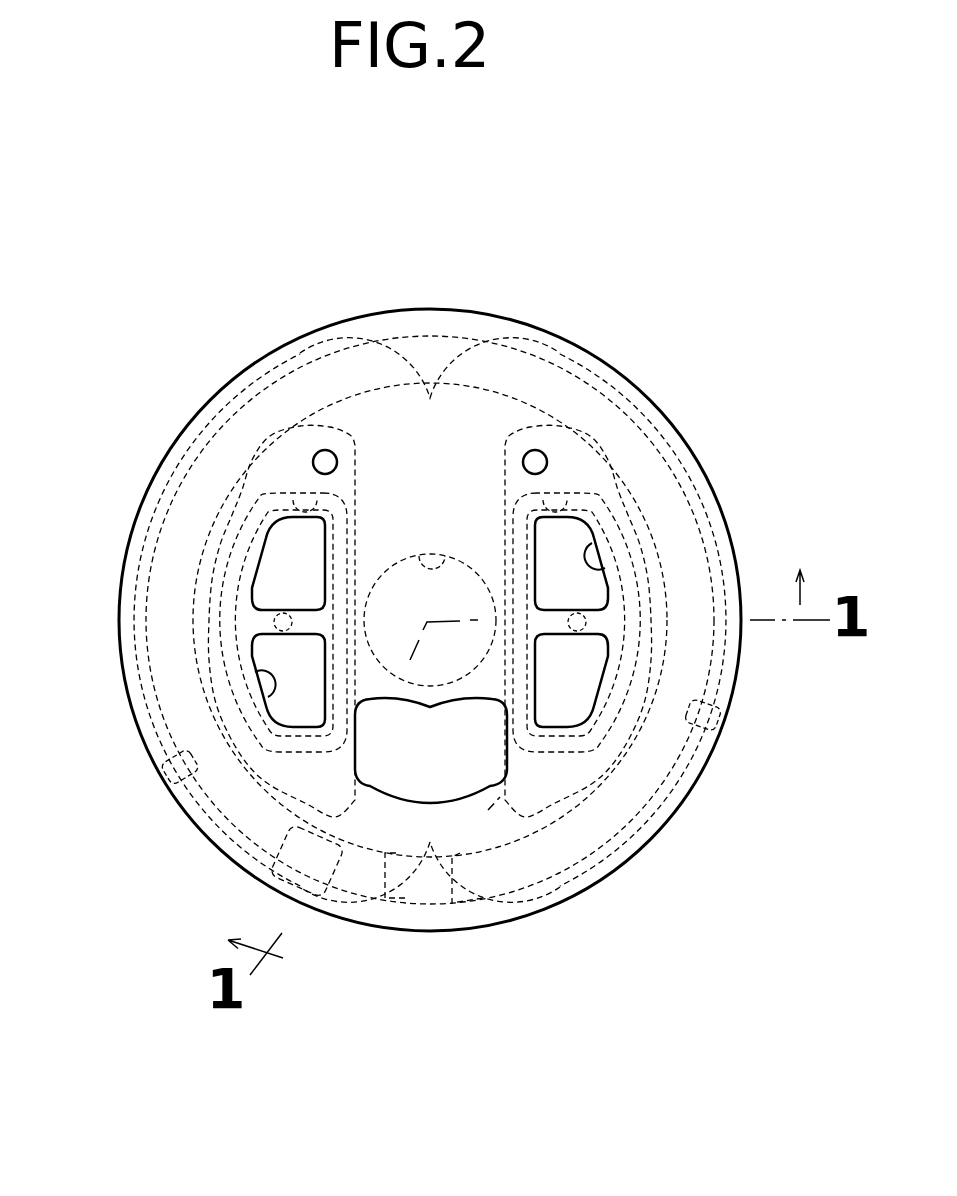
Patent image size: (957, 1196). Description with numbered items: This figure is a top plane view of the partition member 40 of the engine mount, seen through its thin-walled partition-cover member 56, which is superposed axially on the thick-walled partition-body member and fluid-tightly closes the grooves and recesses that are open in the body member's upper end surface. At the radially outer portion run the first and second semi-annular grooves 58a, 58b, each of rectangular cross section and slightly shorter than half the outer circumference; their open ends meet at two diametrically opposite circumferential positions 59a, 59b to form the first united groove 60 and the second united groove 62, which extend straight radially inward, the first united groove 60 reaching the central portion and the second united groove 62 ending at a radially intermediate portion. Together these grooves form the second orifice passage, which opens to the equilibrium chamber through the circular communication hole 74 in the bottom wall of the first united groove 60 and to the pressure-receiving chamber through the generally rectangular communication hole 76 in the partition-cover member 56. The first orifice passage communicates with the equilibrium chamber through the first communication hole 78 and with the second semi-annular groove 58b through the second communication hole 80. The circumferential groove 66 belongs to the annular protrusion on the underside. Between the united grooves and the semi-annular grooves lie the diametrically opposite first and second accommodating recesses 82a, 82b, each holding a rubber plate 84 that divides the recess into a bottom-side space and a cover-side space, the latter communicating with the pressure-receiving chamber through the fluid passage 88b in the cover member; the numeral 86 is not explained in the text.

The partition member 40 is at (541, 264).
The partition-cover member 56 is at (452, 322).
The first semi-annular groove 58a is at (711, 731).
The second semi-annular groove 58b is at (176, 789).
The circumferential position 59a is at (421, 346).
The circumferential position 59b is at (432, 900).
The first united groove 60 is at (360, 477).
The second united groove 62 is at (488, 810).
The circumferential groove 66 is at (643, 517).
The communication hole 74 is at (443, 555).
The communication hole 76 is at (402, 701).
The first communication hole 78 is at (407, 883).
The second communication hole 80 is at (260, 868).
The first accommodating recess 82a is at (565, 500).
The second accommodating recess 82b is at (293, 497).
The rubber plate 84 is at (272, 562).
The ring portion 86 is at (140, 693).
The fluid passage 88b is at (266, 697).